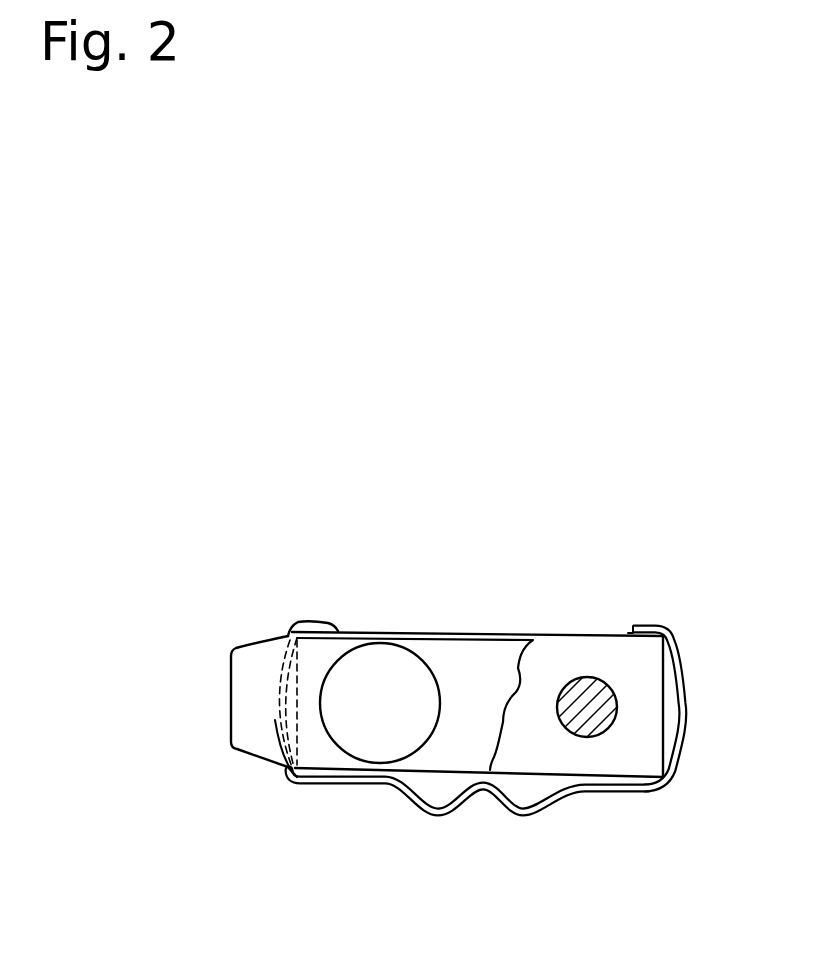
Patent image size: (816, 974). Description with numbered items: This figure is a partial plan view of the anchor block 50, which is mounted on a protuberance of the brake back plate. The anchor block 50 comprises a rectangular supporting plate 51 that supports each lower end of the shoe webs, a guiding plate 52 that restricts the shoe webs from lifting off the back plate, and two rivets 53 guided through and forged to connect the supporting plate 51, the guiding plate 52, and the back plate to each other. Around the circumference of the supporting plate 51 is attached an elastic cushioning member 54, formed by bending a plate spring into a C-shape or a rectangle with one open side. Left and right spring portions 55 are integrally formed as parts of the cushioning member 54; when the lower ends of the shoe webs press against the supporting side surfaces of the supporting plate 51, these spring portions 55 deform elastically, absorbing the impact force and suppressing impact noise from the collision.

The anchor block 50 is at (647, 527).
The supporting plate 51 is at (557, 652).
The guiding plate 52 is at (468, 655).
The rivets 53 is at (380, 655).
The elastic cushioning member 54 is at (520, 814).
The spring portions 55 is at (685, 732).